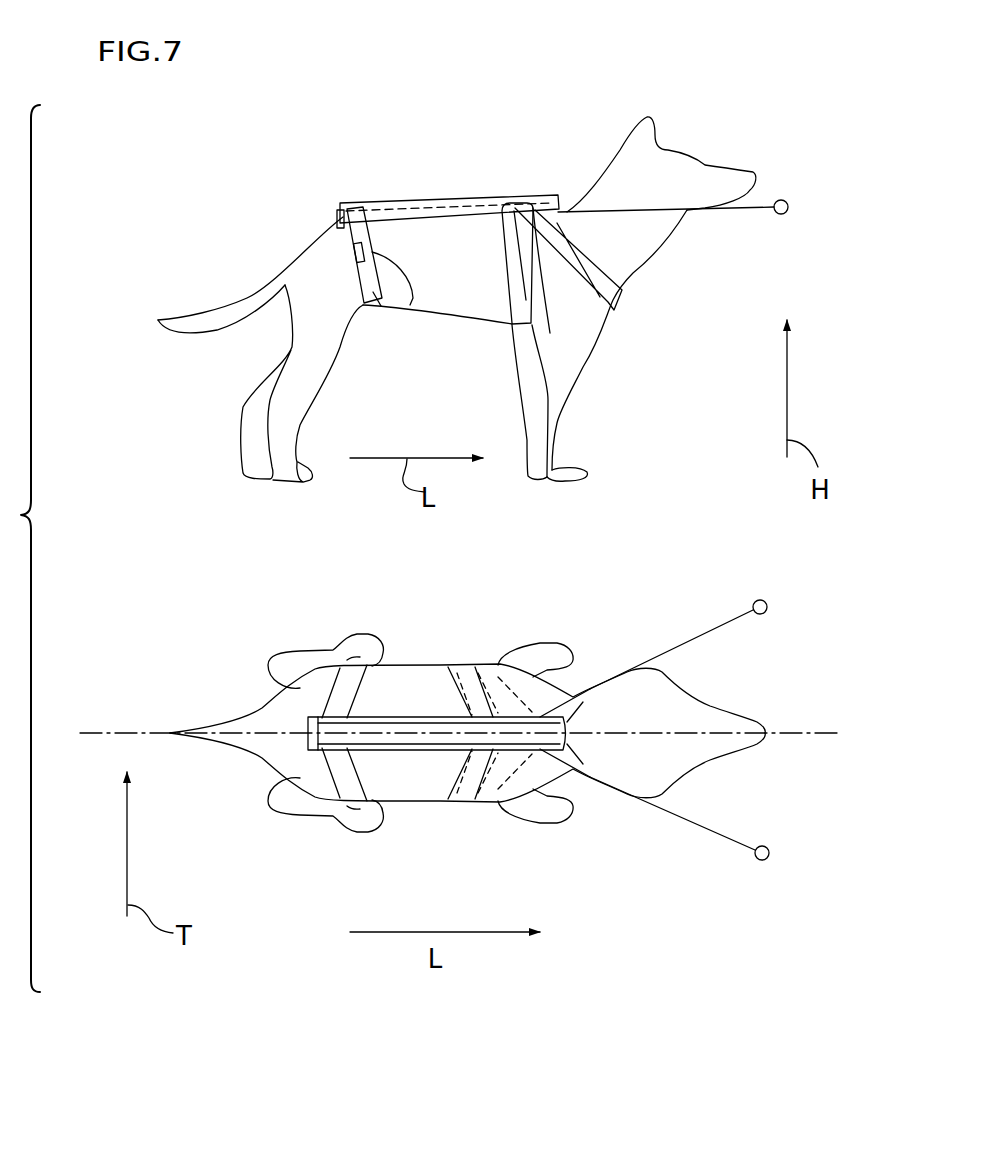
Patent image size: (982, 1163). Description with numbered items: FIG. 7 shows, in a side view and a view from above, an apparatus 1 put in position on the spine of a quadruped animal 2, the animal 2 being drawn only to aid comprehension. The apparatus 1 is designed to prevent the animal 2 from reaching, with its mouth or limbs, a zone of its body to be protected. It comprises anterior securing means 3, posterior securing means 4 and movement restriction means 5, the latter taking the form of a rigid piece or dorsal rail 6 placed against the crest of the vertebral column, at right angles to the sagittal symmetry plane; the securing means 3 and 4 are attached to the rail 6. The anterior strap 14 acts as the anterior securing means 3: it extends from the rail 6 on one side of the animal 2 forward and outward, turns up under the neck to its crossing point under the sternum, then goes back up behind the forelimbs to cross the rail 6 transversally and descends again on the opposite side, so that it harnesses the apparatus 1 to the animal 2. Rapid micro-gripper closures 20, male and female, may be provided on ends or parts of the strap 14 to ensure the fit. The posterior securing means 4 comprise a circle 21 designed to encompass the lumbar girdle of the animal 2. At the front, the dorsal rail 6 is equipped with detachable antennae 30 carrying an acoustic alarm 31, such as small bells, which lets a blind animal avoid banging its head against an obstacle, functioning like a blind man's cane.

The apparatus 1 is at (241, 159).
The quadruped animal 2 is at (677, 218).
The anterior securing means 3 is at (551, 92).
The posterior securing means 4 is at (306, 117).
The movement restriction means 5 is at (417, 146).
The dorsal rail 6 is at (330, 204).
The anterior strap 14 is at (605, 297).
The rapid micro-gripper closures 20 is at (413, 307).
The circle 21 is at (378, 313).
The detachable antennae 30 is at (615, 203).
The acoustic alarm 31 is at (782, 192).